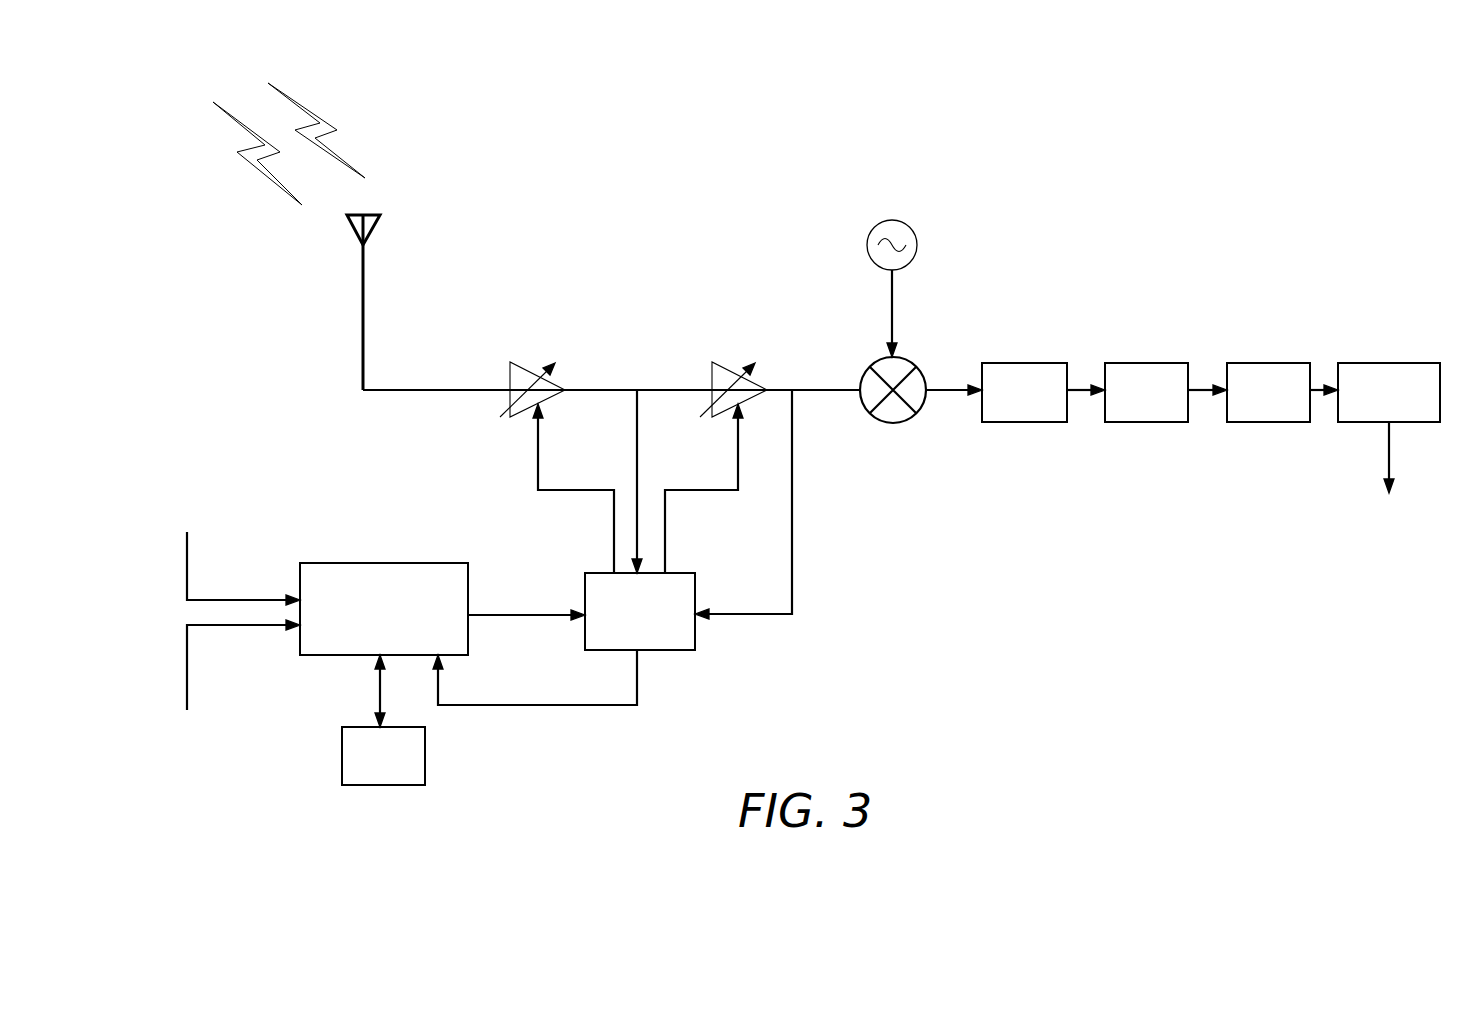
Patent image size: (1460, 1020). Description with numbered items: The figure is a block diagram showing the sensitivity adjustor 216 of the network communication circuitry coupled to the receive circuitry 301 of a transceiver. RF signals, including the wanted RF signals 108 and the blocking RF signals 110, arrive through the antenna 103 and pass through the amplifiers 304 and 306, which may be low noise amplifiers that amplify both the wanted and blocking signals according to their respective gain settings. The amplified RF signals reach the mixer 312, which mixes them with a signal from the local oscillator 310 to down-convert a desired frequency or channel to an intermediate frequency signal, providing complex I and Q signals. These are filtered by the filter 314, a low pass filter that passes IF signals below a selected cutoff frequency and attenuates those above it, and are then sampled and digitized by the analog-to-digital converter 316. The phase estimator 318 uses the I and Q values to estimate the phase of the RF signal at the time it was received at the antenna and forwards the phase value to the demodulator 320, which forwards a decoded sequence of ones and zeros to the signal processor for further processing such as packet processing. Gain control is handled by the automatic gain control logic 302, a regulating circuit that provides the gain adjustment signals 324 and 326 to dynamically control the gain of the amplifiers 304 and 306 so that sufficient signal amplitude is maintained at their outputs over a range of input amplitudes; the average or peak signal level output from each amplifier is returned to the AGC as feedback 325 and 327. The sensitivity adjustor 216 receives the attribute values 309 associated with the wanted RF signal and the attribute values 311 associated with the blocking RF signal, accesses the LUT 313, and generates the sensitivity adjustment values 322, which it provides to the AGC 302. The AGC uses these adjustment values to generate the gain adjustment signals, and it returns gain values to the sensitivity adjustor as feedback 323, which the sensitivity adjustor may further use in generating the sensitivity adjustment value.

The receive circuitry 301 is at (1140, 79).
The wanted RF signals 108 is at (230, 120).
The blocking RF signals 110 is at (290, 100).
The antenna 103 is at (365, 267).
The amplifier 304 is at (510, 372).
The amplifier 306 is at (712, 372).
The local oscillator 310 is at (917, 241).
The mixer 312 is at (920, 365).
The filter 314 is at (1006, 416).
The analog-to-digital converter 316 is at (1128, 416).
The phase estimator 318 is at (1250, 416).
The demodulator 320 is at (1371, 416).
The attribute values 309 is at (218, 510).
The attribute values 311 is at (220, 714).
The sensitivity adjustor 216 is at (366, 648).
The LUT 313 is at (365, 781).
The automatic gain control logic 302 is at (622, 638).
The sensitivity adjustment values 322 is at (503, 615).
The feedback 323 is at (517, 705).
The gain adjustment signal 324 is at (538, 476).
The feedback 325 is at (636, 460).
The gain adjustment signal 326 is at (738, 476).
The feedback 327 is at (792, 572).